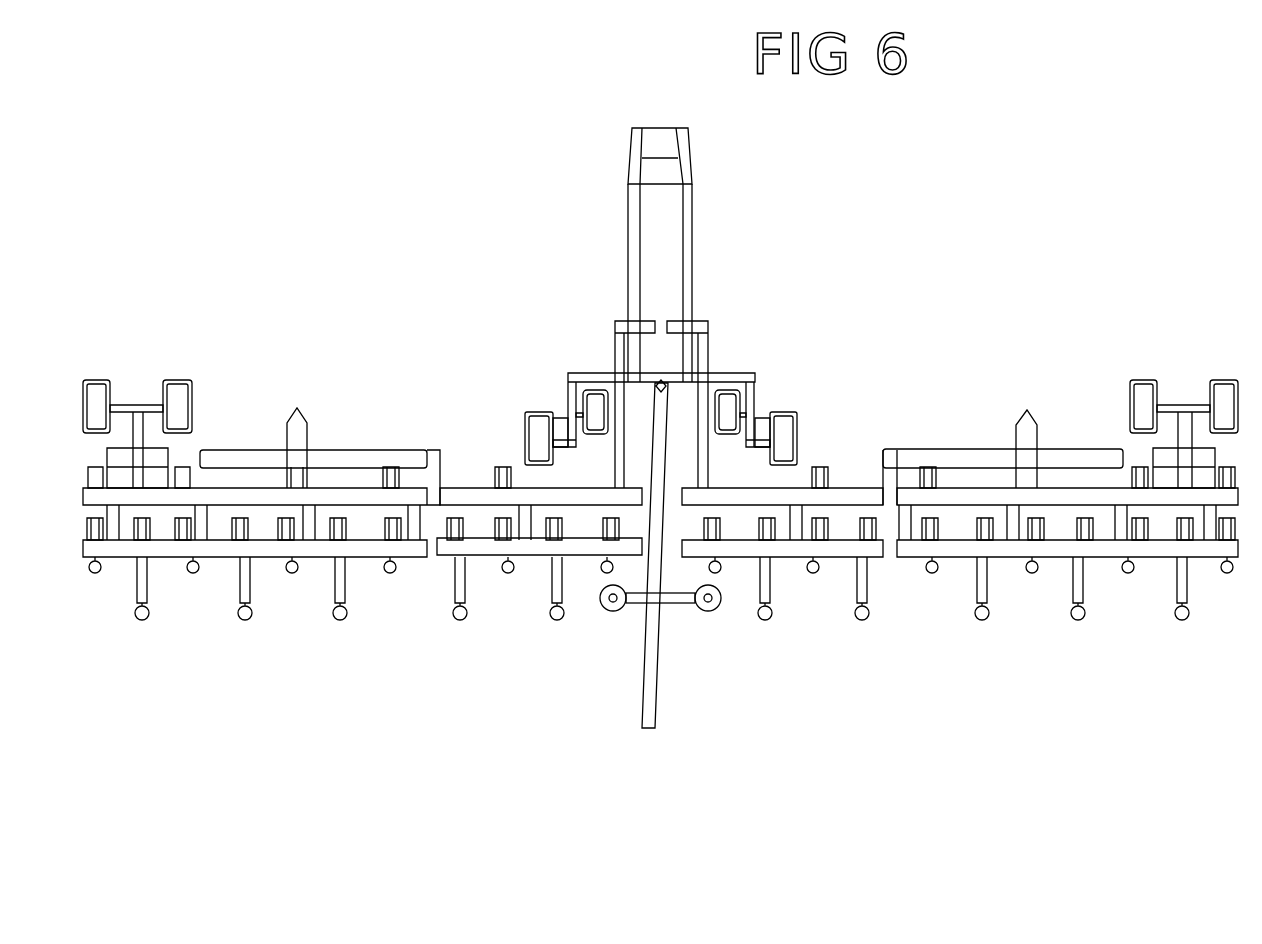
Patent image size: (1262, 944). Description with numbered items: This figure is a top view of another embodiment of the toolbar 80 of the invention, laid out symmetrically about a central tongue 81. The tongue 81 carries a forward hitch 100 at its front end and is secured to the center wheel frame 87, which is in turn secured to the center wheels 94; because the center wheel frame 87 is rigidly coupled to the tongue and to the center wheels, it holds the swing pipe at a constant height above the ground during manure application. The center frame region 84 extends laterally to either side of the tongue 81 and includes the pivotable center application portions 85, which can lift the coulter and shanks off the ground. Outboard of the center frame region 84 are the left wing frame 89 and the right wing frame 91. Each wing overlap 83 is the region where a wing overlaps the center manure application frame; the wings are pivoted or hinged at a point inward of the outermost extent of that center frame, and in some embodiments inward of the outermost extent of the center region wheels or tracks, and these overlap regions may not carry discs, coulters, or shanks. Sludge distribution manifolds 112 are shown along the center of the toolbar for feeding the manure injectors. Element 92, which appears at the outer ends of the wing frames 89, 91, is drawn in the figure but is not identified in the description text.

The toolbar 80 is at (990, 290).
The tongue 81 is at (693, 275).
The wing overlap 83 is at (456, 487).
The center frame region 84 is at (853, 765).
The pivotable center application portions 85 is at (492, 548).
The center wheel frame 87 is at (602, 376).
The left wing frame 89 is at (233, 490).
The right wing frame 91 is at (975, 453).
The end clamp assembly 92 is at (97, 380).
The center wheels 94 is at (527, 414).
The forward hitch 100 is at (683, 130).
The sludge distribution manifolds 112 is at (608, 618).